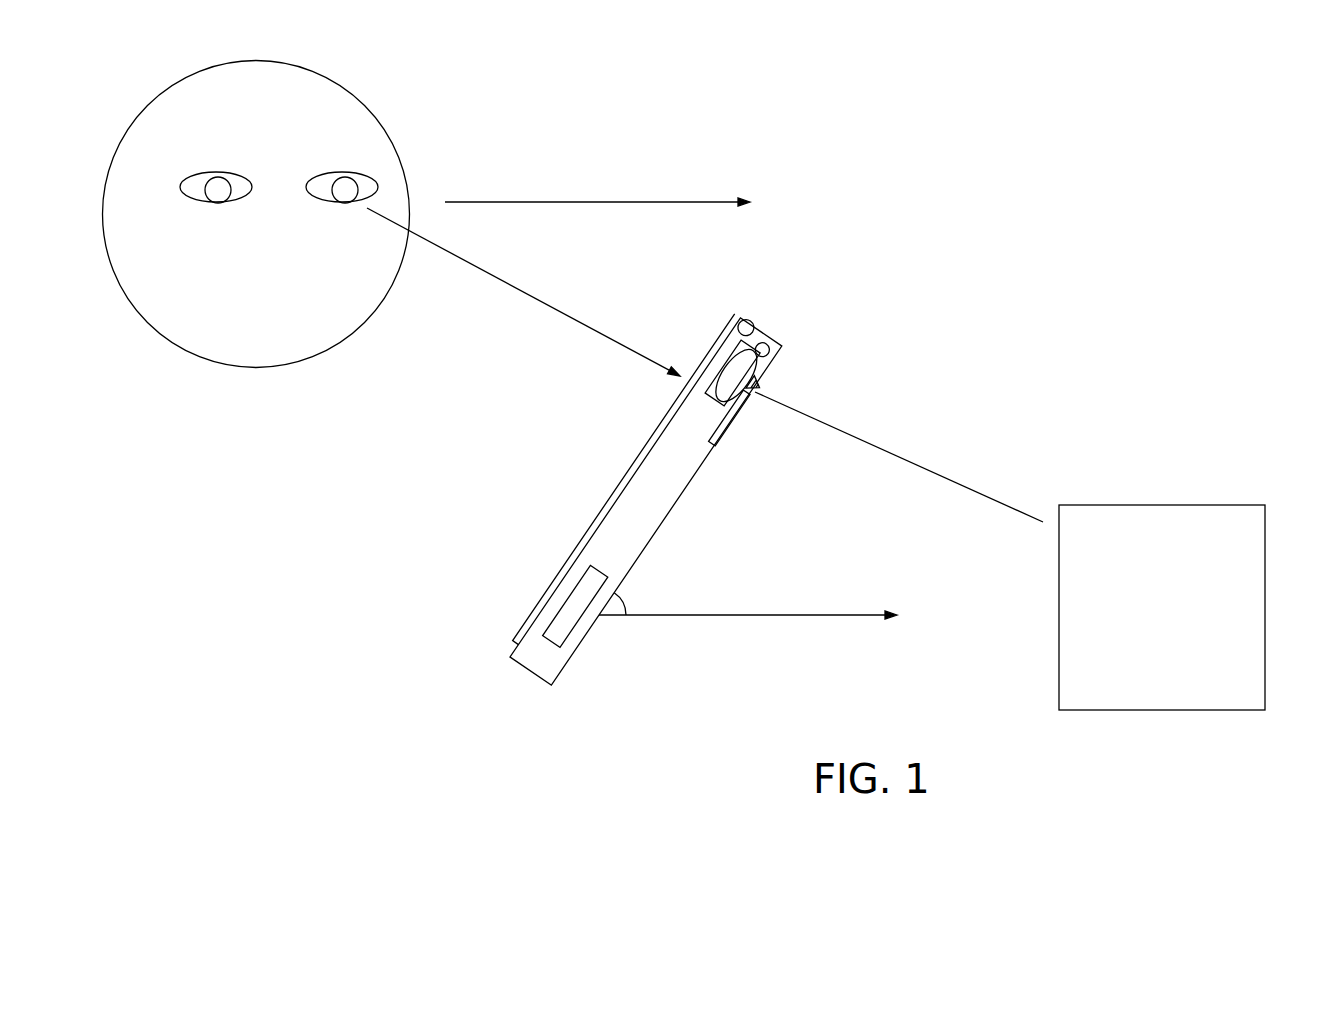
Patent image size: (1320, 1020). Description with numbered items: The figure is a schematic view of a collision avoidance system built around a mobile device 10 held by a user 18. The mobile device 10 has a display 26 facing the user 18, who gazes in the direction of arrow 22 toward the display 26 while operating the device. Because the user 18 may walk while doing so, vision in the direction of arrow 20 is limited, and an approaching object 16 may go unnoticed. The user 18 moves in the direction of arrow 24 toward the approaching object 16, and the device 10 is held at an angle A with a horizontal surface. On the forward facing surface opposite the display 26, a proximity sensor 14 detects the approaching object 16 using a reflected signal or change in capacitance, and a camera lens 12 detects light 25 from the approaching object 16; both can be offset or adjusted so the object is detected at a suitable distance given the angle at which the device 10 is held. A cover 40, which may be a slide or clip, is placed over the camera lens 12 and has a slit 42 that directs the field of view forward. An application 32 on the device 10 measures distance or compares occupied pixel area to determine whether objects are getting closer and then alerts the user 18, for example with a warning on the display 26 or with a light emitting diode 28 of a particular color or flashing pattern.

The mobile device 10 is at (675, 524).
The camera lens 12 is at (745, 364).
The proximity sensor 14 is at (768, 342).
The approaching object 16 is at (1059, 600).
The user 18 is at (275, 350).
The arrow 20 is at (573, 202).
The arrow 22 is at (498, 283).
The arrow 24 is at (821, 615).
The light 25 is at (933, 470).
The display 26 is at (590, 523).
The light emitting diode 28 is at (743, 317).
The application 32 is at (584, 626).
The cover 40 is at (730, 437).
The slit 42 is at (753, 389).